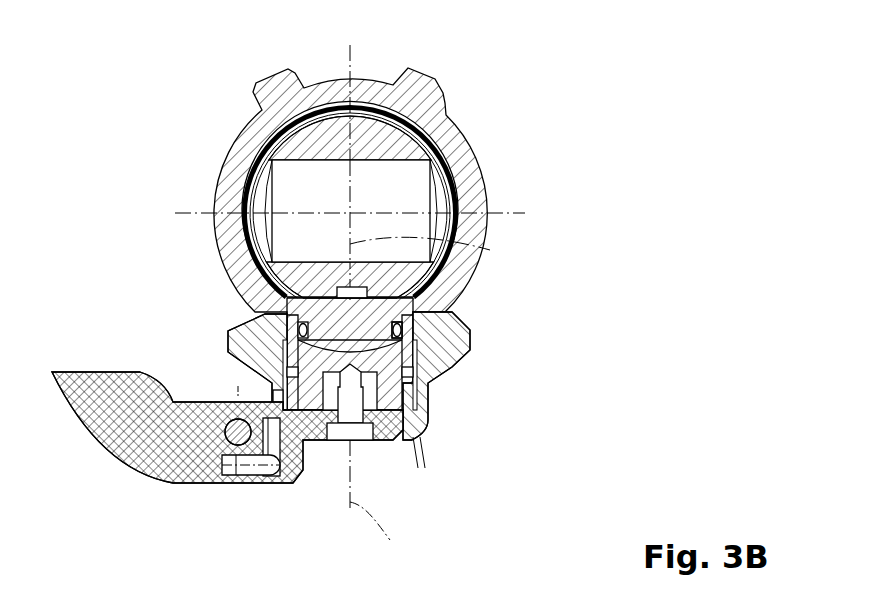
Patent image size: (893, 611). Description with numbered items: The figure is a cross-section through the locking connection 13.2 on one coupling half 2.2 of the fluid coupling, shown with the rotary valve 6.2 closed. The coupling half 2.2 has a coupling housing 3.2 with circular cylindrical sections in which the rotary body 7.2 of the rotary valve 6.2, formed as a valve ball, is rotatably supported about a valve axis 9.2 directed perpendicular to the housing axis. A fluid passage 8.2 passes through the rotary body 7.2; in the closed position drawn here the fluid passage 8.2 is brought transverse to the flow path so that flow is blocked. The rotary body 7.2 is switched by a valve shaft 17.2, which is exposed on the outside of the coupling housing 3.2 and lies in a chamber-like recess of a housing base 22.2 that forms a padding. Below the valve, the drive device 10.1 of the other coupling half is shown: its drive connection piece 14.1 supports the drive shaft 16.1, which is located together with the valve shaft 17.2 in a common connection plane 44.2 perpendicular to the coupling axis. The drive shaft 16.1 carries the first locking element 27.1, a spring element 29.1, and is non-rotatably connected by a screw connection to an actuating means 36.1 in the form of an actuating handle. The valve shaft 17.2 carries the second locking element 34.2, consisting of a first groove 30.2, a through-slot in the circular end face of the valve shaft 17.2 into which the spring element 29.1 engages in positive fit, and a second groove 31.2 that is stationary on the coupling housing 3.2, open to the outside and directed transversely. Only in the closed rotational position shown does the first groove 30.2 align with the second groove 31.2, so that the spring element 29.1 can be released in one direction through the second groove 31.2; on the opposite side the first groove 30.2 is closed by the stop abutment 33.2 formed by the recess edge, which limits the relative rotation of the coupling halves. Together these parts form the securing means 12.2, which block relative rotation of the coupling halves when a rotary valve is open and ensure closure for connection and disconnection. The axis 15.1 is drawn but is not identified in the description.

The coupling half 2.2 is at (387, 68).
The coupling housing 3.2 is at (487, 187).
The rotary valve 6.2 is at (458, 163).
The rotary body 7.2 is at (410, 153).
The fluid passage 8.2 is at (330, 202).
The valve axis 9.2 is at (490, 250).
The drive device 10.1 is at (440, 395).
The securing means 12.2 is at (416, 342).
The locking connection 13.2 is at (416, 342).
The drive connection piece 14.1 is at (244, 368).
The axis 15.1 is at (350, 455).
The drive shaft 16.1 is at (428, 425).
The valve shaft 17.2 is at (415, 300).
The housing base 22.2 is at (289, 340).
The first locking element 27.1 is at (323, 441).
The spring element 29.1 is at (323, 441).
The first groove 30.2 is at (268, 332).
The second groove 31.2 is at (430, 352).
The stop abutment 33.2 is at (297, 337).
The second locking element 34.2 is at (428, 468).
The actuating means 36.1 is at (203, 483).
The connection plane 44.2 is at (396, 533).